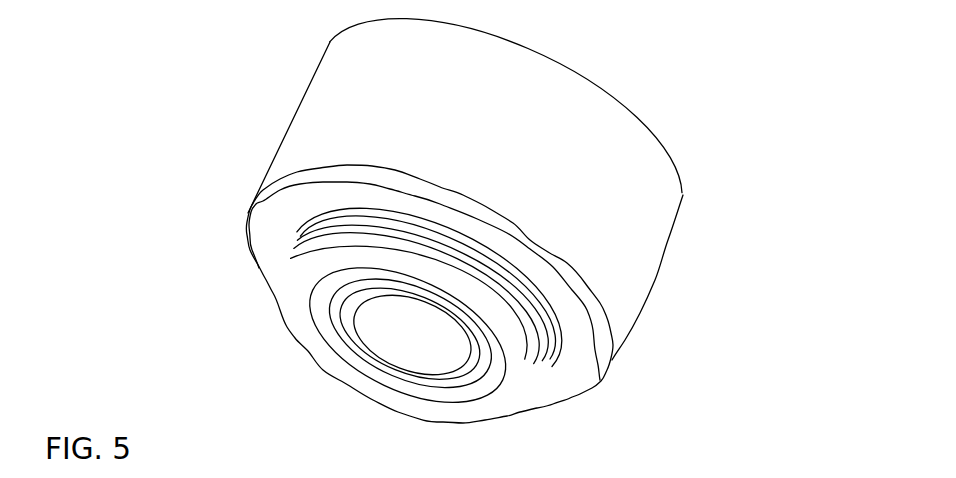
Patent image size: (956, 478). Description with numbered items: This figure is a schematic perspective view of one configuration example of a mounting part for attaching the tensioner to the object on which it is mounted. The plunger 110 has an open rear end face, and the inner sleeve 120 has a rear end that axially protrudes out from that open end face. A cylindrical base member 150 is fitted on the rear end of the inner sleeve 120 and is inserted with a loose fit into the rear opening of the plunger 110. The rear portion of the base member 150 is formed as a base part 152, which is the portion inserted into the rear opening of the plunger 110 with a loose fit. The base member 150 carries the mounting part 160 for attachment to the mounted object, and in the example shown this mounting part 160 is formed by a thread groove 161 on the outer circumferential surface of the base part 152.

The plunger 110 is at (637, 158).
The inner sleeve 120 is at (358, 352).
The base member 150 is at (277, 307).
The base part 152 is at (523, 278).
The mounting part 160 is at (553, 365).
The thread groove 161 is at (293, 252).